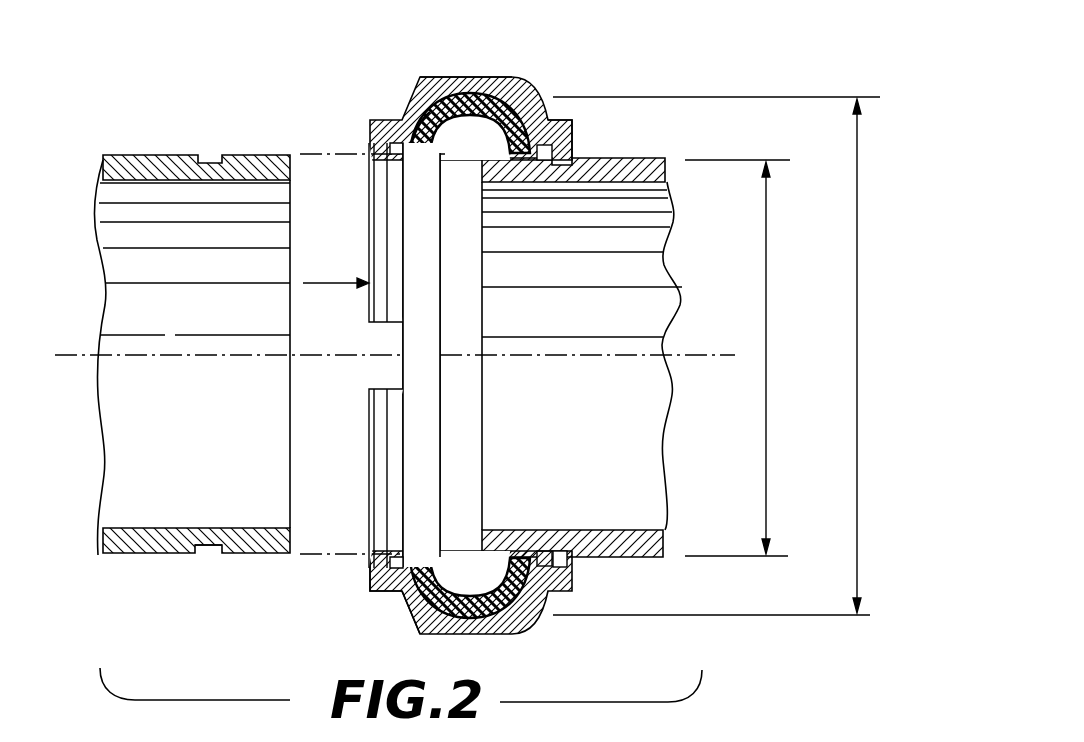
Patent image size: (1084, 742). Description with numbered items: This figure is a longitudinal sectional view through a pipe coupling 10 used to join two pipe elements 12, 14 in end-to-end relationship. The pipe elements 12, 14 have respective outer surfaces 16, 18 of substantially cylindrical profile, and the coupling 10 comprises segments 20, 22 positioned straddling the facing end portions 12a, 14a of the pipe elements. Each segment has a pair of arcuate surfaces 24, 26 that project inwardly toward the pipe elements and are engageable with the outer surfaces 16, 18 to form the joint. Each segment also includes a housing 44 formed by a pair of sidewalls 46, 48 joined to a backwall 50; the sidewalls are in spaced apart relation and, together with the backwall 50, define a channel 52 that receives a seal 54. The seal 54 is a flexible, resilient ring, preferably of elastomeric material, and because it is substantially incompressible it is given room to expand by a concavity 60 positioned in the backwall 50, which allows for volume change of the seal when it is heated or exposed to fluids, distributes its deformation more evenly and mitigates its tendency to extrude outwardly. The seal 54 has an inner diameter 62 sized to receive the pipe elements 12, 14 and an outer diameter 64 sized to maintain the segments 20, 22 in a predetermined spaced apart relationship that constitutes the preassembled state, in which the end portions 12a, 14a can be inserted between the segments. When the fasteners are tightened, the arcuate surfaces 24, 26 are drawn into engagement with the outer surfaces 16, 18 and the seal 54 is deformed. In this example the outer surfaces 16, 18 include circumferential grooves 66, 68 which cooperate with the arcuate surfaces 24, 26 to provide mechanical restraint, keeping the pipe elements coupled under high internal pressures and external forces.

The pipe coupling 10 is at (293, 93).
The pipe element 12 is at (125, 553).
The end portion 12a is at (243, 530).
The pipe element 14 is at (635, 538).
The end portion 14a is at (592, 533).
The outer surface 16 is at (160, 155).
The outer surface 18 is at (638, 558).
The segment 20 is at (520, 78).
The segment 22 is at (528, 628).
The arcuate surface 24 is at (383, 212).
The arcuate surface 26 is at (383, 451).
The housing 44 is at (402, 90).
The sidewall 46 is at (380, 102).
The sidewall 48 is at (553, 105).
The backwall 50 is at (465, 76).
The channel 52 is at (368, 572).
The seal 54 is at (398, 608).
The concavity 60 is at (460, 628).
The inner diameter 62 is at (766, 290).
The outer diameter 64 is at (857, 360).
The circumferential groove 66 is at (210, 553).
The circumferential groove 68 is at (565, 578).